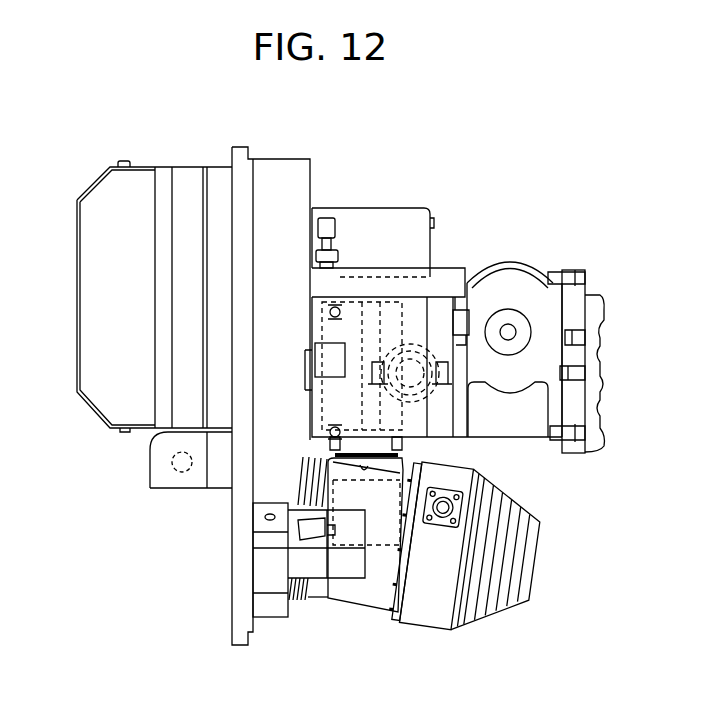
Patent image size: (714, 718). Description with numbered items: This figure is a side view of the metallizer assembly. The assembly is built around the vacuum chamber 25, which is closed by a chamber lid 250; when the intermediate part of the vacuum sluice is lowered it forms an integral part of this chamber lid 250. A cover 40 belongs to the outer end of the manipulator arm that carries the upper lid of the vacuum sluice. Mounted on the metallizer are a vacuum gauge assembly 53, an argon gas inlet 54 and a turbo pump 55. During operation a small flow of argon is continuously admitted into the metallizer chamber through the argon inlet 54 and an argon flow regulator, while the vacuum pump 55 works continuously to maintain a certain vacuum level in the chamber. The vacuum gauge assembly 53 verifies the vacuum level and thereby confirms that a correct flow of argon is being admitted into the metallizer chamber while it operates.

The vacuum chamber 25 is at (312, 177).
The cover 40 is at (100, 258).
The vacuum gauge assembly 53 is at (372, 208).
The argon gas inlet 54 is at (463, 270).
The chamber lid 250 is at (232, 522).
The turbo pump 55 is at (453, 630).